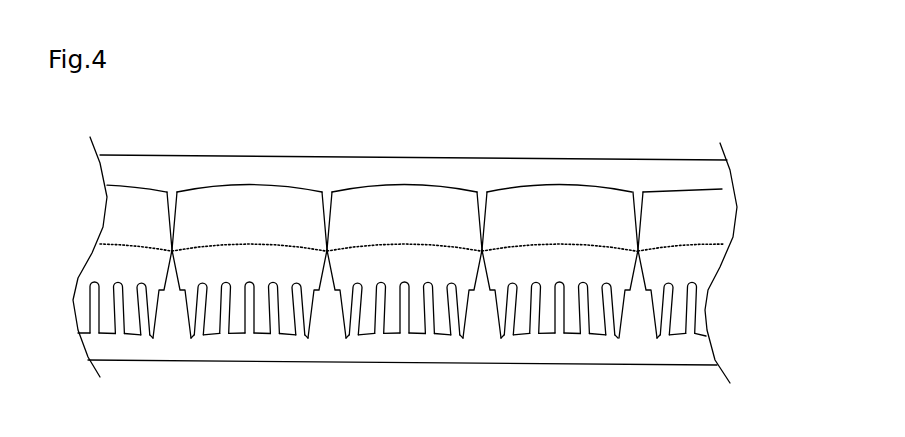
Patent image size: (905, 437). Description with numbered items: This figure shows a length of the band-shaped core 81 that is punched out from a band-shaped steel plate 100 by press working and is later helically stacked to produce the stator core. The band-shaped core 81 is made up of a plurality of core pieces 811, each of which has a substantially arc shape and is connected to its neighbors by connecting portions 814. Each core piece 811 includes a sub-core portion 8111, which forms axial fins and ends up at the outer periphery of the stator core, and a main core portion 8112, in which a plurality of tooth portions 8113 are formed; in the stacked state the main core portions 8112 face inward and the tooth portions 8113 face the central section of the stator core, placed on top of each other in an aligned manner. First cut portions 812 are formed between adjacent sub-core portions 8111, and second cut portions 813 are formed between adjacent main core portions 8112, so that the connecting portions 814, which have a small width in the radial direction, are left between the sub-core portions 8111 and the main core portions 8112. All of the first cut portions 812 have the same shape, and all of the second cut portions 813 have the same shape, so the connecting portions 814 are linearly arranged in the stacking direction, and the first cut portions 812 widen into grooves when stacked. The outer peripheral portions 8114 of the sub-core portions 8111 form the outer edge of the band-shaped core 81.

The band-shaped steel plate 100 is at (598, 160).
The band-shaped core 81 is at (721, 217).
The core piece 811 is at (482, 260).
The sub-core portion 8111 is at (740, 247).
The main core portion 8112 is at (728, 338).
The first cut portion 812 is at (327, 191).
The second cut portion 813 is at (327, 288).
The connecting portion 814 is at (329, 252).
The tooth portion 8113 is at (391, 320).
The outer peripheral portion 8114 is at (357, 192).